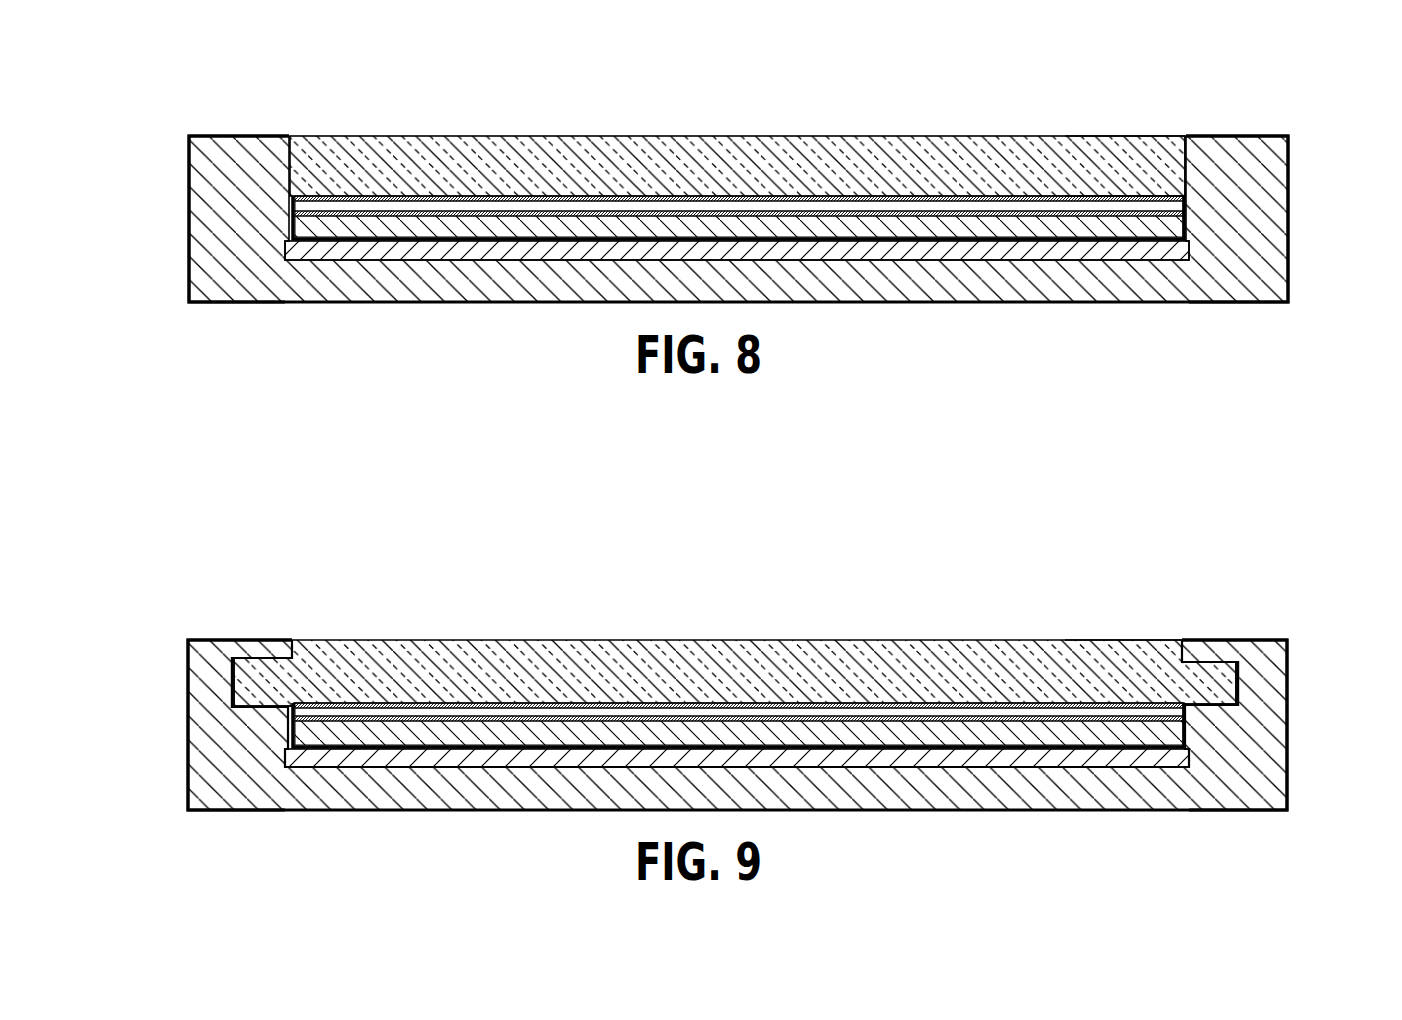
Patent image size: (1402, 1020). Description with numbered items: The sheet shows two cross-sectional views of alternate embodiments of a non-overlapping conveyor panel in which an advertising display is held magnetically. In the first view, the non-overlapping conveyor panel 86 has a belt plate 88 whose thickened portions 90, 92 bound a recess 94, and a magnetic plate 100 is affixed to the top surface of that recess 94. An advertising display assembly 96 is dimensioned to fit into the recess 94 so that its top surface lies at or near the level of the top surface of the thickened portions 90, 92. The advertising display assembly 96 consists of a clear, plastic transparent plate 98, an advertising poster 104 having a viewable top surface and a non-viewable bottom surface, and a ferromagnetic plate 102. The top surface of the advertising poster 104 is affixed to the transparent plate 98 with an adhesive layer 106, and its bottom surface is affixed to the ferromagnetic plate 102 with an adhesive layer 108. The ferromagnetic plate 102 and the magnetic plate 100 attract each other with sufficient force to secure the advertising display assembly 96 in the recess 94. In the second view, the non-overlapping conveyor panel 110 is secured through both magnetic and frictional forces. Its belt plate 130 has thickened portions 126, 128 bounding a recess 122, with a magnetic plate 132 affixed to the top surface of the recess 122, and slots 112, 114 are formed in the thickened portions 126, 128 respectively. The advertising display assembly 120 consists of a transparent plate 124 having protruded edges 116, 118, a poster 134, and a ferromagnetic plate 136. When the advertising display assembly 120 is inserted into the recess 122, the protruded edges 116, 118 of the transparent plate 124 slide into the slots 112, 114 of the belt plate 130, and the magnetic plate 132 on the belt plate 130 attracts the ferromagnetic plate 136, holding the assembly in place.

In FIG. 8, the non-overlapping conveyor panel 86 is at (937, 114).
In FIG. 8, the belt plate 88 is at (402, 302).
In FIG. 8, the thickened portion 90 is at (246, 142).
In FIG. 8, the thickened portion 92 is at (1225, 137).
In FIG. 8, the recess 94 is at (416, 254).
In FIG. 8, the advertising display assembly 96 is at (765, 127).
In FIG. 8, the transparent plate 98 is at (1066, 142).
In FIG. 8, the magnetic plate 100 is at (928, 246).
In FIG. 8, the ferromagnetic plate 102 is at (1040, 228).
In FIG. 8, the advertising poster 104 is at (303, 206).
In FIG. 8, the adhesive layer 106 is at (1158, 200).
In FIG. 8, the adhesive layer 108 is at (1147, 220).
In FIG. 9, the non-overlapping conveyor panel 110 is at (934, 619).
In FIG. 9, the slot 112 is at (262, 680).
In FIG. 9, the slot 114 is at (1240, 703).
In FIG. 9, the protruded edge 116 is at (267, 678).
In FIG. 9, the protruded edge 118 is at (1222, 683).
In FIG. 9, the advertising display assembly 120 is at (762, 633).
In FIG. 9, the recess 122 is at (418, 754).
In FIG. 9, the transparent plate 124 is at (1066, 646).
In FIG. 9, the thickened portion 126 is at (218, 647).
In FIG. 9, the thickened portion 128 is at (1257, 645).
In FIG. 9, the belt plate 130 is at (400, 809).
In FIG. 9, the magnetic plate 132 is at (925, 760).
In FIG. 9, the poster 134 is at (300, 712).
In FIG. 9, the ferromagnetic plate 136 is at (1040, 738).